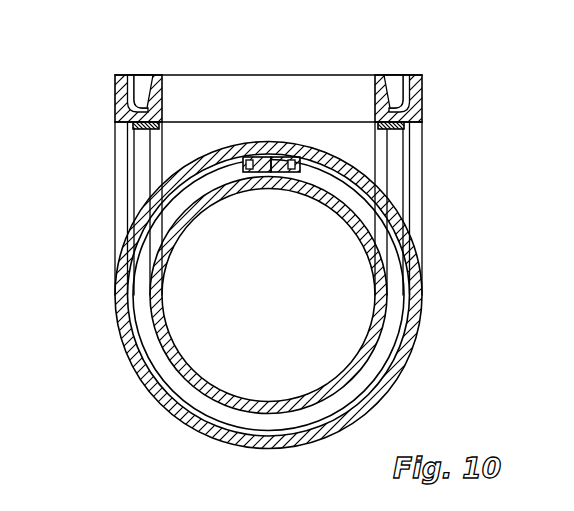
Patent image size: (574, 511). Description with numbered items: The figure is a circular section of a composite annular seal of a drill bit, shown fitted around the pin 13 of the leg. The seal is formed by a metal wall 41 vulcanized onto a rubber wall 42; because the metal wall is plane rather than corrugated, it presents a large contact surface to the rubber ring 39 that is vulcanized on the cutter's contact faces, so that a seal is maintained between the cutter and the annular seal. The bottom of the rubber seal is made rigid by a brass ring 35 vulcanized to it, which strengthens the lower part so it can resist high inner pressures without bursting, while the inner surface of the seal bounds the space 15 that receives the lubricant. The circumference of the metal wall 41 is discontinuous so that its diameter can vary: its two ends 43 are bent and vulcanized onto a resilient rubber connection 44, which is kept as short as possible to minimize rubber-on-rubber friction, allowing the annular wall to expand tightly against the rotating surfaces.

The pin 13 is at (220, 378).
The space 15 is at (143, 92).
The brass ring 35 is at (136, 123).
The rubber ring 39 is at (115, 83).
The metal wall 41 is at (130, 80).
The rubber wall 42 is at (157, 85).
The ends 43 is at (247, 150).
The resilient rubber connection 44 is at (283, 152).